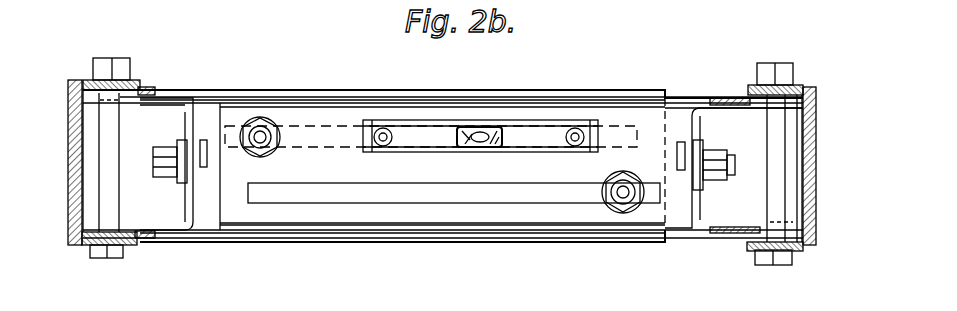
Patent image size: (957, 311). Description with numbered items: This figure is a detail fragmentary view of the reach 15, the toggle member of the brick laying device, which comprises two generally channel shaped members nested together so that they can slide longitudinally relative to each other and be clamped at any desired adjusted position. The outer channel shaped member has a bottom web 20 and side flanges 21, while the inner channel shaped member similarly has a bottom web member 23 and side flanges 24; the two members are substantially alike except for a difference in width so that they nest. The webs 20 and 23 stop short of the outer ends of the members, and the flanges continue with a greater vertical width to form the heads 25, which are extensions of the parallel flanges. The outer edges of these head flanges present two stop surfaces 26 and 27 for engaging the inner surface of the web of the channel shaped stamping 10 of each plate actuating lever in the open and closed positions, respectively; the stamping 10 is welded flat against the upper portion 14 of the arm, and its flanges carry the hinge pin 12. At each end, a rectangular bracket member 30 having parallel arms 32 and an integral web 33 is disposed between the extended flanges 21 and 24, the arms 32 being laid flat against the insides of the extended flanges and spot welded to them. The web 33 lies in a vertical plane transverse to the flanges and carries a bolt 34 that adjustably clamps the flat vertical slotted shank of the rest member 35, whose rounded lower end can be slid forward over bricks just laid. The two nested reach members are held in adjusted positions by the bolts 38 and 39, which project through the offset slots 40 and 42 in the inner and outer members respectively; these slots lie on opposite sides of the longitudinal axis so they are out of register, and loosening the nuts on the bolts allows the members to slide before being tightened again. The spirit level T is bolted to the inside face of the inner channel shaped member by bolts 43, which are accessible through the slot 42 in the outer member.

The channel shaped stamping 10 is at (80, 121).
The hinge pin 12 is at (117, 258).
The upper portion of the arm 14 is at (73, 173).
The reach 15 is at (623, 86).
The bottom web 20 is at (210, 218).
The side flanges 21 is at (512, 93).
The bottom web member 23 is at (333, 215).
The side flanges 24 is at (325, 100).
The heads 25 is at (117, 88).
The stop surface 26 is at (84, 81).
The stop surface 27 is at (73, 232).
The rectangular bracket member 30 is at (170, 90).
The arms 32 is at (152, 94).
The web 33 is at (200, 120).
The bolt 34 is at (728, 163).
The rest member 35 is at (187, 203).
The bolt 38 is at (262, 133).
The bolt 39 is at (622, 200).
The slot 40 is at (433, 187).
The slot 42 is at (298, 143).
The bolts 43 is at (385, 130).
The spirit level T is at (472, 127).